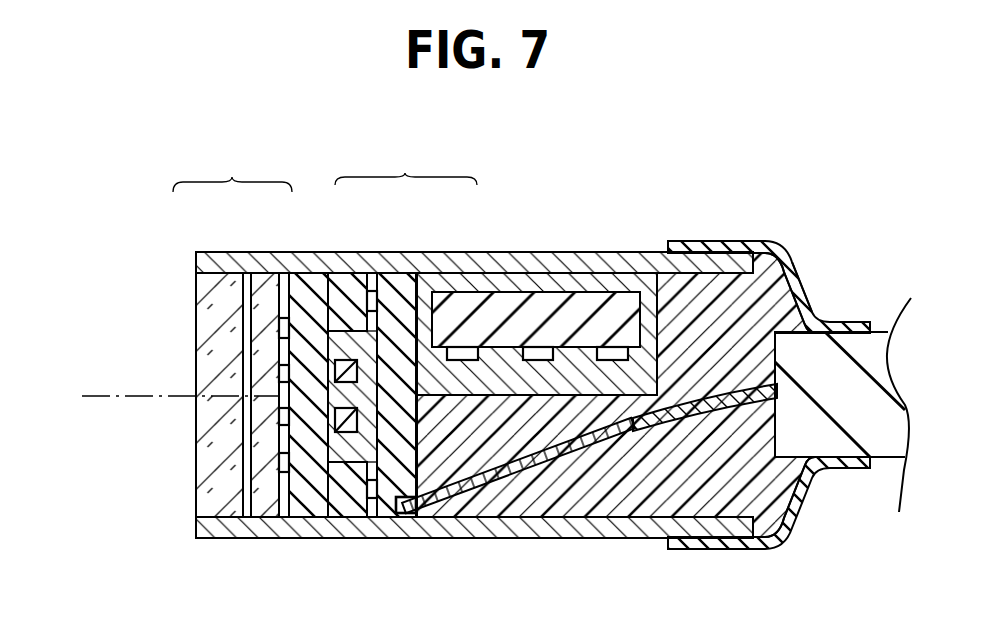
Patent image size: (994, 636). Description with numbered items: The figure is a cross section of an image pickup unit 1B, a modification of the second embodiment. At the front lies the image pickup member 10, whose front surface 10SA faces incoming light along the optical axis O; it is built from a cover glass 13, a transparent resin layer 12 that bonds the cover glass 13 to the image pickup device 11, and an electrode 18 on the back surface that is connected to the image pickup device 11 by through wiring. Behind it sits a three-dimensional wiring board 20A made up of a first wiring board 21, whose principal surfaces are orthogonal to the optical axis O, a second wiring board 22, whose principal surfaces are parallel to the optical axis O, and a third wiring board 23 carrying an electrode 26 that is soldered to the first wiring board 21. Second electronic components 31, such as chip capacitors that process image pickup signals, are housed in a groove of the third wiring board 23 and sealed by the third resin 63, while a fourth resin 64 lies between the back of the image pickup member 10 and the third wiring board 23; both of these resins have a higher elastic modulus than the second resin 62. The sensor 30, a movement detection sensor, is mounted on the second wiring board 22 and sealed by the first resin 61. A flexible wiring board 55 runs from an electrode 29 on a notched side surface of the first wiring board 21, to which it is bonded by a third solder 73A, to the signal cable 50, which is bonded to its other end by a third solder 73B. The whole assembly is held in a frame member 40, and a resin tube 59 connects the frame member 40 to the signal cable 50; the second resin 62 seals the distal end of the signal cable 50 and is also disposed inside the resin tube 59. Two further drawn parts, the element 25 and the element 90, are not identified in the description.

The image pickup unit 1B is at (824, 193).
The image pickup member 10 is at (232, 168).
The cover glass 13 is at (228, 273).
The transparent resin layer 12 is at (248, 273).
The image pickup device 11 is at (266, 273).
The three-dimensional wiring board 20A is at (406, 164).
The third wiring board 23 is at (323, 273).
The first wiring board 21 is at (400, 273).
The second wiring board 22 is at (443, 300).
The movement detection sensor 30 is at (545, 288).
The first resin 61 is at (612, 296).
The frame member 40 is at (722, 242).
The resin tube 59 is at (808, 293).
The second resin 62 is at (803, 500).
The signal cable 50 is at (886, 460).
The third resin 63 is at (320, 356).
The fourth resin 64 is at (286, 352).
The optical axis O is at (166, 397).
The electrode 18 is at (282, 418).
The front surface 10SA is at (186, 476).
The electrode 29 is at (248, 517).
The second electronic components 31 is at (292, 466).
The electrode 26 is at (350, 493).
The conductive member 90 is at (371, 505).
The third solder 73A is at (406, 514).
The filling member 25 is at (416, 497).
The flexible wiring board 55 is at (537, 462).
The third solder 73B is at (626, 437).